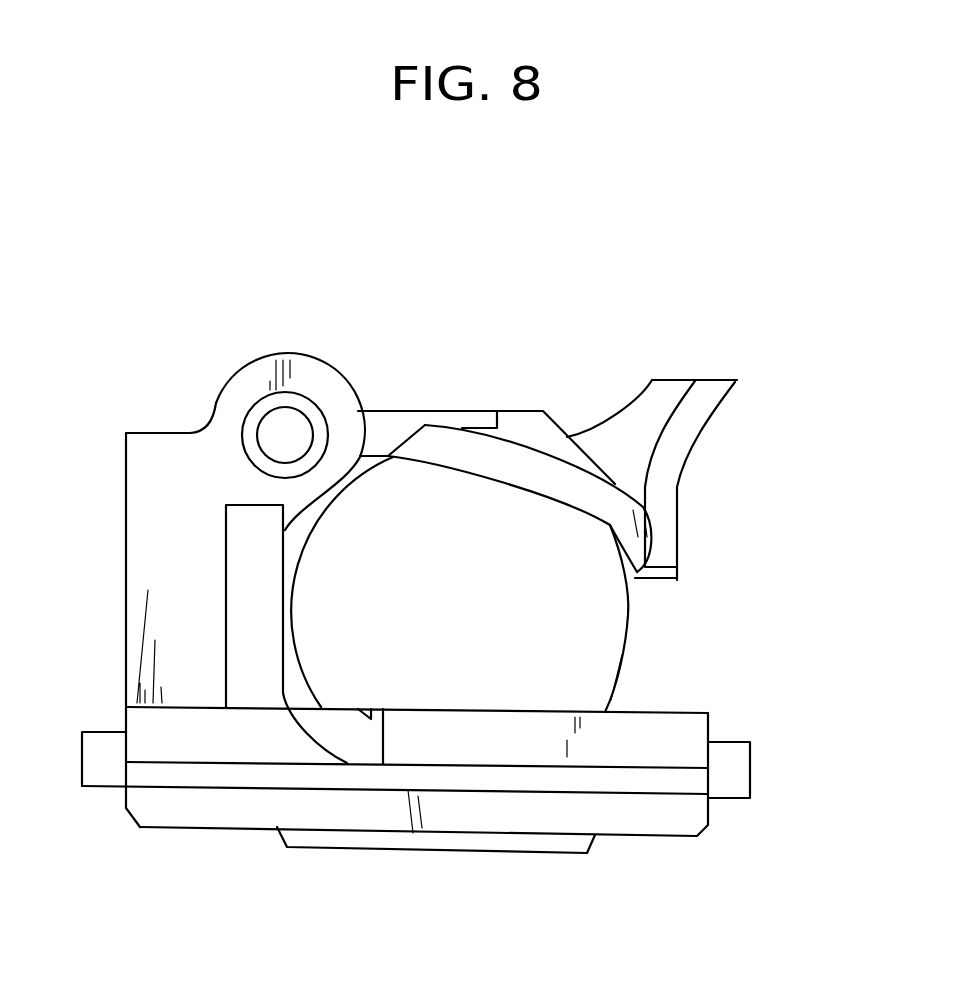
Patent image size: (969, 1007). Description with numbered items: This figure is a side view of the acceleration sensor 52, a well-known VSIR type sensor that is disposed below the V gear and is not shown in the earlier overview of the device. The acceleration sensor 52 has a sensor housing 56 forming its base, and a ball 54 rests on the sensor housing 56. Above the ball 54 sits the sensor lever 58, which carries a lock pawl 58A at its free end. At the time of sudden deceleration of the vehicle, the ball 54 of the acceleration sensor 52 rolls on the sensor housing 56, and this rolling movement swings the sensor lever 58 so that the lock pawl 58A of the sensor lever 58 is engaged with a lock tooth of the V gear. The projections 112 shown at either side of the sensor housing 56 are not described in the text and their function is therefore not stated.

The acceleration sensor 52 is at (481, 320).
The ball 54 is at (618, 660).
The sensor housing 56 is at (655, 822).
The sensor lever 58 is at (536, 403).
The lock pawl 58A is at (710, 392).
The projection 112 is at (90, 752).